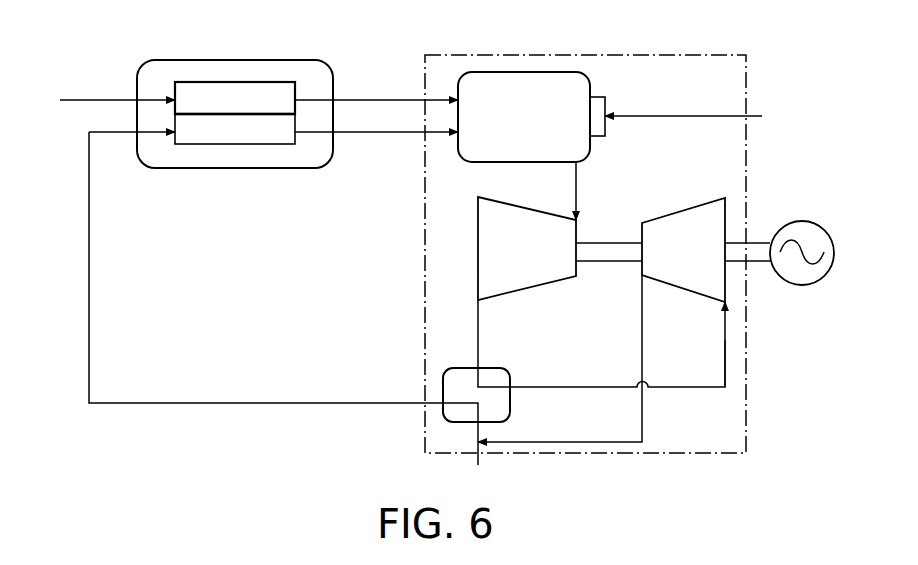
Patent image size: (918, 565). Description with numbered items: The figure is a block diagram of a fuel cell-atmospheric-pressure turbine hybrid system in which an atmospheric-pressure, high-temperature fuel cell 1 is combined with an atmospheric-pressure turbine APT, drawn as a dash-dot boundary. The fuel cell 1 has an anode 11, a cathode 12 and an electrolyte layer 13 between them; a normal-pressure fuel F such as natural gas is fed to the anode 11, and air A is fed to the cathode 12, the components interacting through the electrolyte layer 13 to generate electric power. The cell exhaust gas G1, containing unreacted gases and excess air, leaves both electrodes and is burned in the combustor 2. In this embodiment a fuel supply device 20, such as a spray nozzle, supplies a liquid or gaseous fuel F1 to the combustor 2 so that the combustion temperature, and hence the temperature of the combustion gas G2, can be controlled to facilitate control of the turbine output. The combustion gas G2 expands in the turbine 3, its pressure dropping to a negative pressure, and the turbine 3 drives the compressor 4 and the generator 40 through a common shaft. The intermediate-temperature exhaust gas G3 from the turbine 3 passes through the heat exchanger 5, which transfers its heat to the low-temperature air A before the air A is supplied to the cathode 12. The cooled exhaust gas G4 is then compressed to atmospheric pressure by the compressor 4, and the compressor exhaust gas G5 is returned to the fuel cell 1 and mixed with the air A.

The fuel cell 1 is at (195, 170).
The anode 11 is at (275, 82).
The cathode 12 is at (268, 145).
The electrolyte layer 13 is at (285, 110).
The combustor 2 is at (538, 72).
The fuel supply device 20 is at (598, 97).
The turbine 3 is at (478, 230).
The compressor 4 is at (686, 210).
The heat exchanger 5 is at (460, 368).
The generator 40 is at (812, 285).
The atmospheric-pressure turbine APT is at (660, 54).
The fuel F is at (102, 100).
The fuel F1 is at (699, 116).
The air A is at (287, 312).
The cell exhaust gas G1 is at (405, 130).
The combustion gas G2 is at (578, 178).
The exhaust gas G3 is at (480, 325).
The exhaust gas G4 is at (723, 338).
The exhaust gas G5 is at (577, 440).